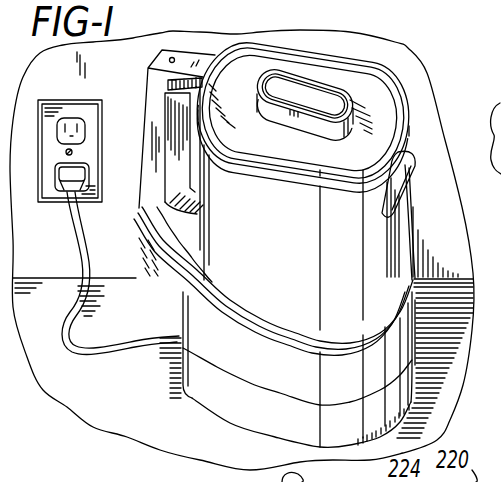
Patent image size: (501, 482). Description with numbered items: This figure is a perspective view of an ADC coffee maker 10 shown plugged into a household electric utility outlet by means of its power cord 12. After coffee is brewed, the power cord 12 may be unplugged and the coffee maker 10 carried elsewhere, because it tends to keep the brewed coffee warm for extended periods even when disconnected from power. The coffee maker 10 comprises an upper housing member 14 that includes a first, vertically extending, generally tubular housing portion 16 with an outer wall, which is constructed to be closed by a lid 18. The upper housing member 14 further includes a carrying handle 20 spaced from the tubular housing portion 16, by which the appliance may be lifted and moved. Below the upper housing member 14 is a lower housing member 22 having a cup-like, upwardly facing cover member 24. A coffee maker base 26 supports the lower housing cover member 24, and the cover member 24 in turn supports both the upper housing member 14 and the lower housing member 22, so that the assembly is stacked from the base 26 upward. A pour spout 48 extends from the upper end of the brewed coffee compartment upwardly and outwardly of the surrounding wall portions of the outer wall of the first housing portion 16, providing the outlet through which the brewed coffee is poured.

The ADC coffee maker 10 is at (344, 56).
The power cord 12 is at (74, 241).
The upper housing member 14 is at (410, 230).
The first, vertically extending, generally tubular housing portion 16 is at (283, 258).
The lid 18 is at (376, 80).
The carrying handle 20 is at (146, 97).
The lower housing member 22 is at (174, 282).
The cover member 24 is at (205, 344).
The coffee maker base 26 is at (205, 392).
The pour spout 48 is at (400, 167).